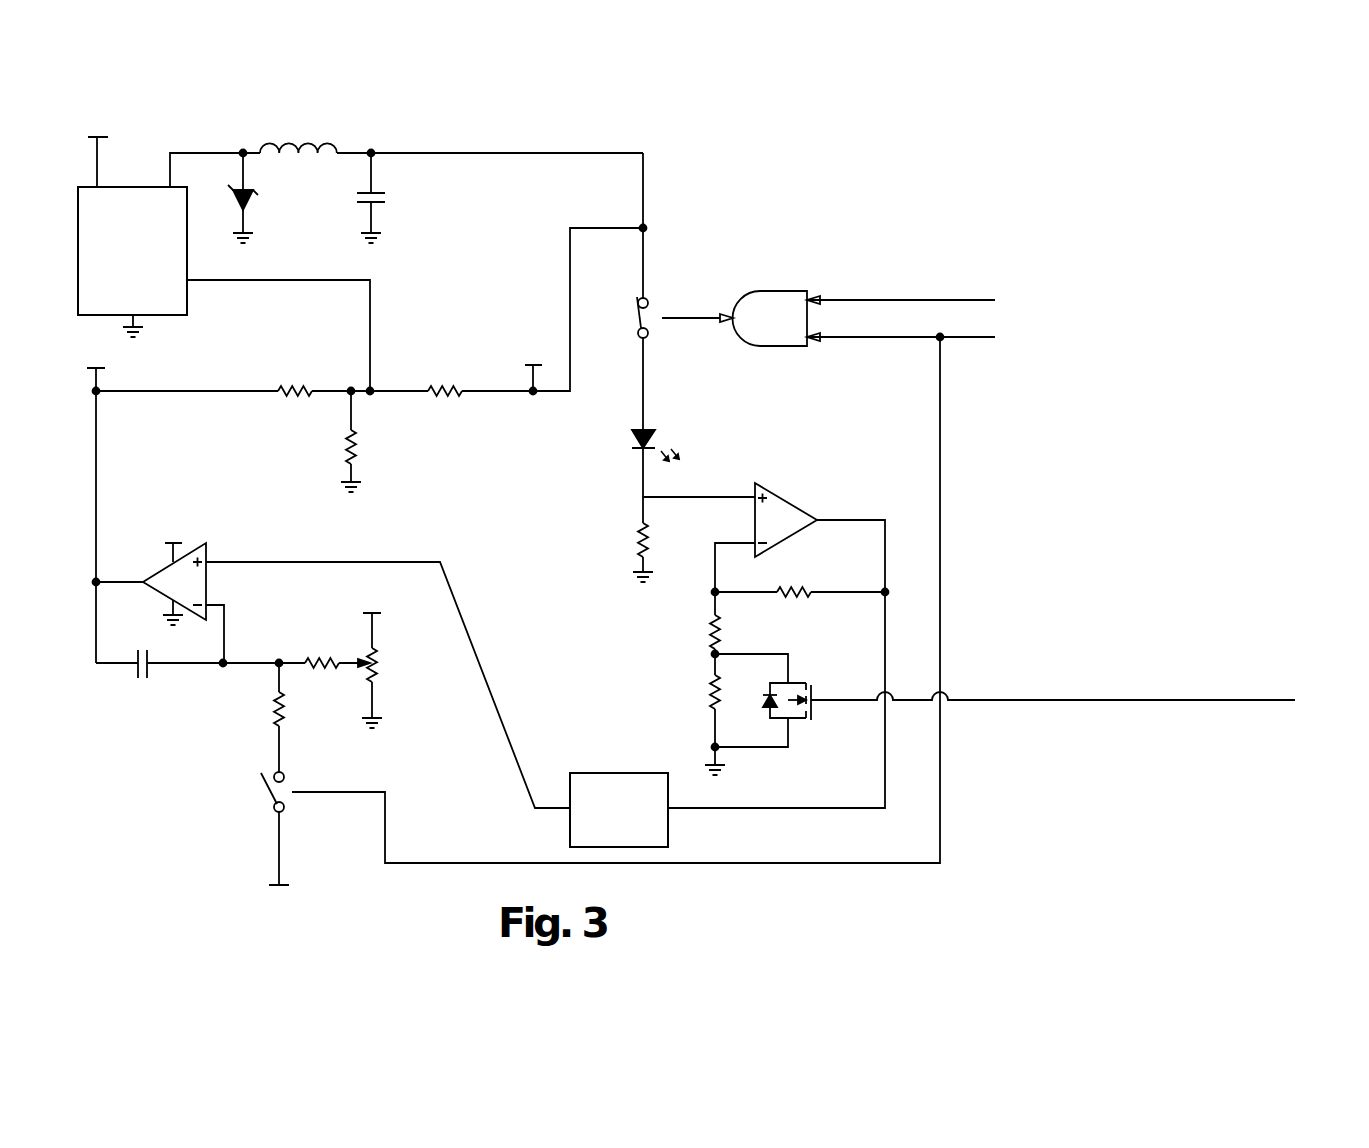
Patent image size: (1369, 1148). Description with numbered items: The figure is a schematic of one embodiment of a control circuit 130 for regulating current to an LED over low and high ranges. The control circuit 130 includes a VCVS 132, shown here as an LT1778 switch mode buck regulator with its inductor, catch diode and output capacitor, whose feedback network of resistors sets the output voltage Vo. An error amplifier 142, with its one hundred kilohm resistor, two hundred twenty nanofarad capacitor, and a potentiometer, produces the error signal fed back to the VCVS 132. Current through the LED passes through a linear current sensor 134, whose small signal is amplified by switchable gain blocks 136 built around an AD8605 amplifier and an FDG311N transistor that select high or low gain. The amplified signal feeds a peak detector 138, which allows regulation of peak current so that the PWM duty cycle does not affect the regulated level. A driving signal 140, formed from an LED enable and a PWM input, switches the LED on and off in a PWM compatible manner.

The control circuit 130 is at (1103, 207).
The VCVS 132 is at (190, 137).
The linear current sensor 134 is at (795, 790).
The switchable gain blocks 136 is at (913, 433).
The peak detector 138 is at (620, 773).
The driving signal 140 is at (853, 255).
The error amplifier 142 is at (230, 730).